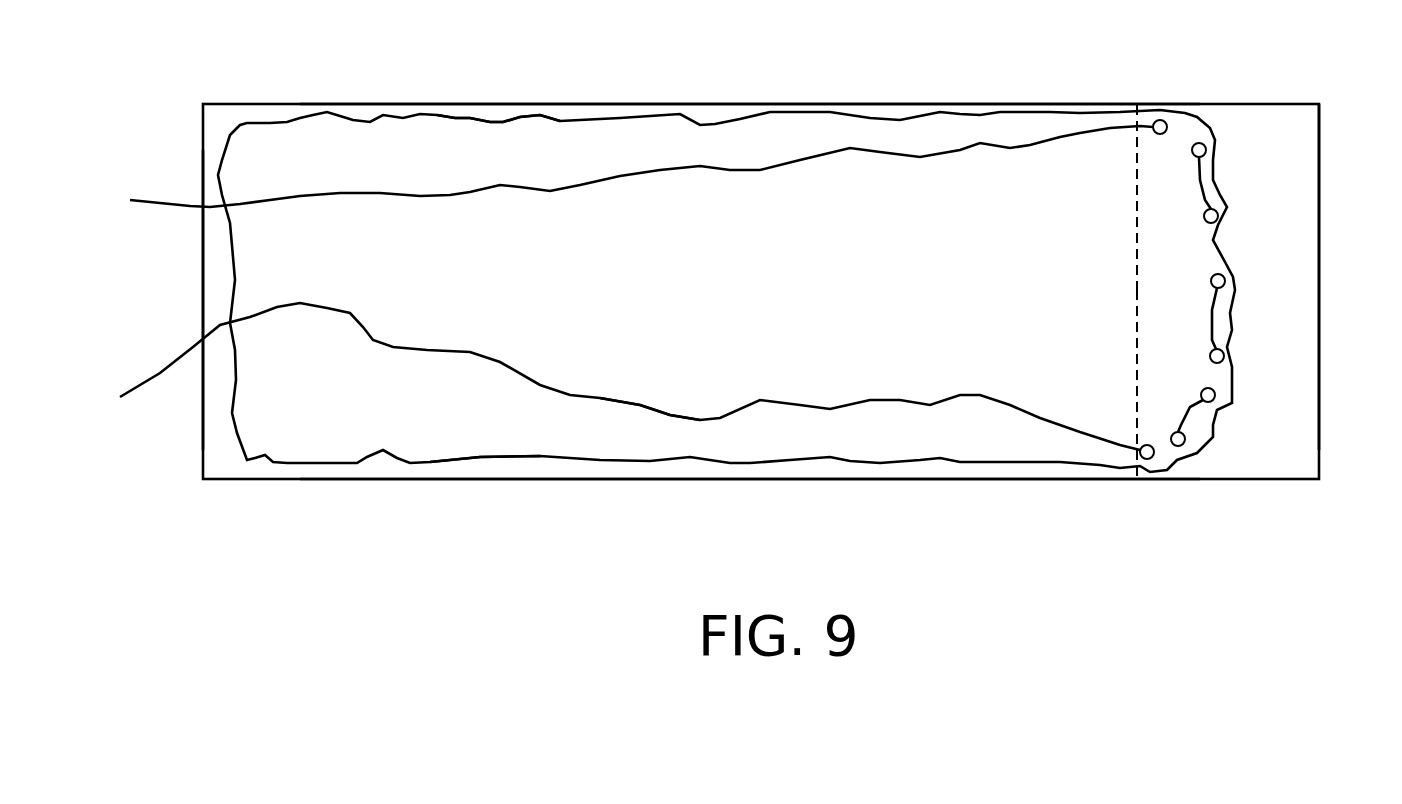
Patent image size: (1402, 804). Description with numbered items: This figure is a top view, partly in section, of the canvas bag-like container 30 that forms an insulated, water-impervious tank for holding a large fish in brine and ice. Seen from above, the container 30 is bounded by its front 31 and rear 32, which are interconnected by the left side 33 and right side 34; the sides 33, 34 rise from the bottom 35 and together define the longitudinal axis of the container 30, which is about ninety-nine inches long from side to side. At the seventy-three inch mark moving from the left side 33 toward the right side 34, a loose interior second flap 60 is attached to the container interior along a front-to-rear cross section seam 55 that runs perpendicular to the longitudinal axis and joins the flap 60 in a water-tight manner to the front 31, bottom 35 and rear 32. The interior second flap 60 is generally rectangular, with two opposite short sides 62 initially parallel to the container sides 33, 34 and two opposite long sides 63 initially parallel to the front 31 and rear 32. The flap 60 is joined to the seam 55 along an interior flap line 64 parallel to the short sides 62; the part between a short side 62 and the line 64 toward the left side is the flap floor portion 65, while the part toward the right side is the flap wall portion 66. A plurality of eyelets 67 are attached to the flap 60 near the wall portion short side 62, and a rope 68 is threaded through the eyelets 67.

The container 30 is at (1322, 437).
The front 31 is at (717, 480).
The rear 32 is at (662, 104).
The left side 33 is at (205, 273).
The right side 34 is at (1321, 253).
The bottom 35 is at (1308, 128).
The cross section seam 55 is at (1137, 168).
The interior second flap 60 is at (678, 296).
The short sides 62 is at (233, 380).
The long sides 63 is at (503, 120).
The interior flap line 64 is at (1137, 385).
The flap floor portion 65 is at (680, 382).
The flap wall portion 66 is at (1190, 185).
The eyelets 67 is at (1234, 292).
The rope 68 is at (467, 195).